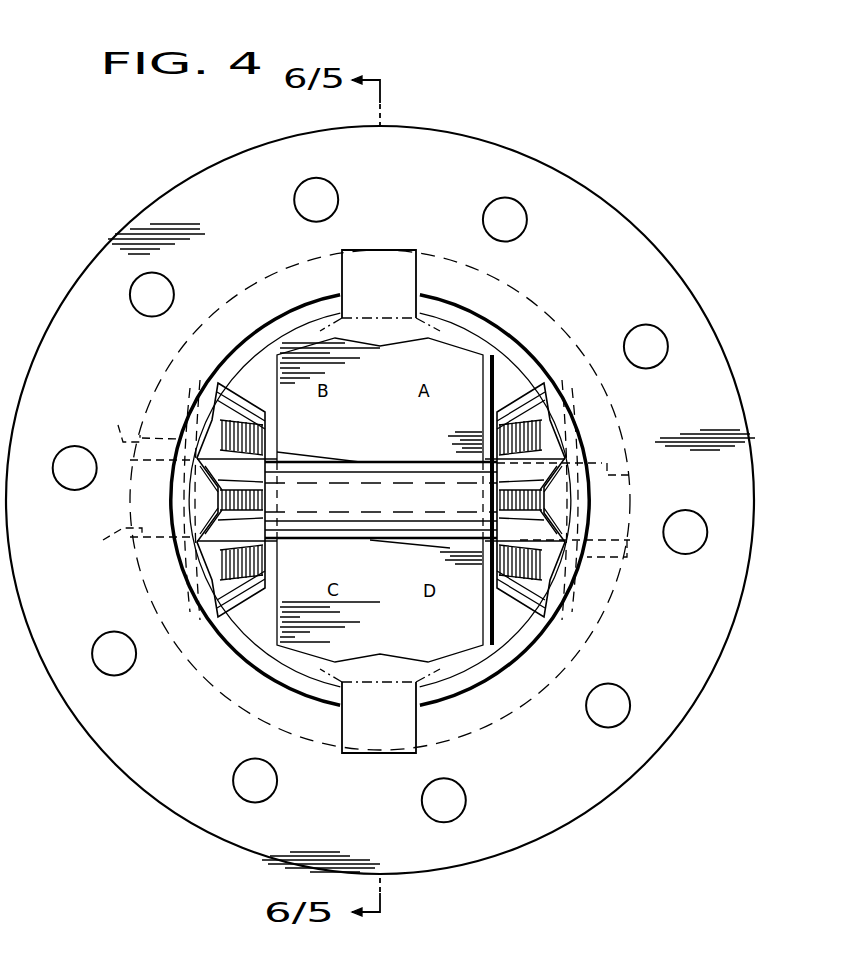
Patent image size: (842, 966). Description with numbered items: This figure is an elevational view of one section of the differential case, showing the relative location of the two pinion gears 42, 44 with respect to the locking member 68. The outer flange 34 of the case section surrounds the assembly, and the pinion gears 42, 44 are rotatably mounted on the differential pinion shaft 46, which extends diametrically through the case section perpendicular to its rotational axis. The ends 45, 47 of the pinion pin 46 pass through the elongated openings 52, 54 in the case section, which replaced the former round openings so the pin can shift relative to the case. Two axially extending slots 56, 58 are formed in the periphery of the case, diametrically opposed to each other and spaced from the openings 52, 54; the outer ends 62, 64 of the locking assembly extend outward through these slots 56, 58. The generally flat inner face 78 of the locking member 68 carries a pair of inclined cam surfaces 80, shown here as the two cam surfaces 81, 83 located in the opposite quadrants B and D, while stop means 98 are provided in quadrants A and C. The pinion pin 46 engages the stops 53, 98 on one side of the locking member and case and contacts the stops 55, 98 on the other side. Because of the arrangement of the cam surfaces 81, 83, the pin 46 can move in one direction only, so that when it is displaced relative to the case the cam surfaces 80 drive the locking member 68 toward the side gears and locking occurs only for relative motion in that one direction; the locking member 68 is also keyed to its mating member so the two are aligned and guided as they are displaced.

The flange 34 is at (604, 201).
The outer end of locking assembly 62 is at (397, 288).
The outer end of locking assembly 64 is at (389, 737).
The axially extending slot 56 is at (410, 262).
The axially extending slot 58 is at (342, 722).
The locking member 68 is at (405, 382).
The inner flat face of locking member 78 is at (418, 624).
The differential pinion shaft 46 is at (390, 511).
The pinion gear 42 is at (230, 395).
The pinion gear 44 is at (527, 586).
The inclined cam surface 80 is at (318, 449).
The inclined cam surface 81 is at (322, 458).
The inclined cam surface 83 is at (433, 545).
The stop means 98 is at (446, 445).
The elongated opening 52 is at (136, 428).
The stop 53 is at (140, 541).
The end of differential pinion pin 45 is at (143, 495).
The stop 55 is at (632, 474).
The end of differential pinion pin 47 is at (613, 503).
The elongated opening 54 is at (630, 558).